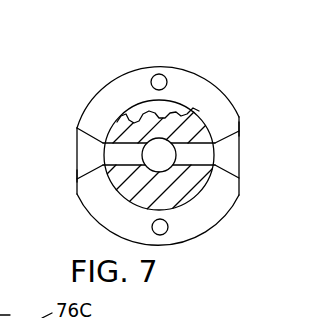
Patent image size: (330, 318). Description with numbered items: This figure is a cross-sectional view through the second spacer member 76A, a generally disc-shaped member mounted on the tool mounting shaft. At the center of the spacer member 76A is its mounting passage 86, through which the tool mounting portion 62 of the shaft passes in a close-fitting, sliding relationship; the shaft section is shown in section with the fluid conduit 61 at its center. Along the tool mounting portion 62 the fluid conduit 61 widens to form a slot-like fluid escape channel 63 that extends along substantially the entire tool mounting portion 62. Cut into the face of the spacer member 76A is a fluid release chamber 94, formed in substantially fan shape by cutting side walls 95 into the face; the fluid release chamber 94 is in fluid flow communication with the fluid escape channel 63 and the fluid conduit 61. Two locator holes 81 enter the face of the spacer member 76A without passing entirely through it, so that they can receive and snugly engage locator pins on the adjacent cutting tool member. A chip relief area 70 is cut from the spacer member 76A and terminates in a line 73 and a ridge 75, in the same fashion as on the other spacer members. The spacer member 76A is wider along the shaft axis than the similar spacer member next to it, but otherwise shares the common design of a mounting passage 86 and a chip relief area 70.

The second spacer member 76A is at (122, 66).
The line 73 is at (77, 128).
The ridge 75 is at (77, 129).
The fluid release chamber 94 is at (83, 146).
The side walls 95 is at (78, 181).
The fluid escape channel 63 is at (77, 176).
The chip relief area 70 is at (240, 128).
The tool mounting portion 62 is at (215, 145).
The mounting passage 86 is at (172, 113).
The fluid conduit 61 is at (168, 168).
The locator holes 81 is at (160, 78).